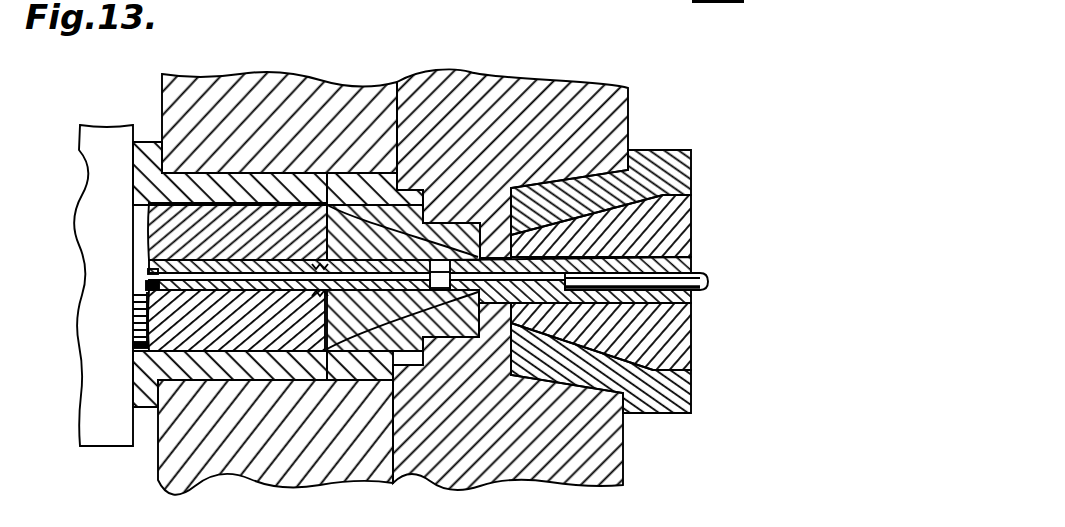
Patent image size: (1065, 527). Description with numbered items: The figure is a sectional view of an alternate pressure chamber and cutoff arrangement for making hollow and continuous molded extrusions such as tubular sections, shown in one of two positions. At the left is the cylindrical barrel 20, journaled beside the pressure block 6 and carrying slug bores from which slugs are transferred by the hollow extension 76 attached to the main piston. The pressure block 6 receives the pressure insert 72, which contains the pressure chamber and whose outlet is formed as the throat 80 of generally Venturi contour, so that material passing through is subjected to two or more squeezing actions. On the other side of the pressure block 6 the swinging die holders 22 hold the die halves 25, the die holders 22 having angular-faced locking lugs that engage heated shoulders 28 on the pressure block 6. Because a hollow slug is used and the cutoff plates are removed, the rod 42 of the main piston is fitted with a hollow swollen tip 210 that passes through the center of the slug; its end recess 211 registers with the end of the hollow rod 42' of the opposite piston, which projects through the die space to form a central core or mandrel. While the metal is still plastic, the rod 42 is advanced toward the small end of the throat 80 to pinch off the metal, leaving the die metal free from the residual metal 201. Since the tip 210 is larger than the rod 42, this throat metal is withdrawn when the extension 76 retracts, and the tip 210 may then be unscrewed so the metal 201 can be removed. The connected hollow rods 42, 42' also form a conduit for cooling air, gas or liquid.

The cylindrical barrel 20 is at (90, 160).
The pressure insert 72 is at (150, 140).
The pressure block 6 is at (297, 105).
The hollow swollen tip 210 is at (362, 206).
The throat 80 is at (412, 204).
The end recess 211 is at (453, 270).
The shoulders 28 is at (600, 103).
The swinging die holders 22 is at (663, 165).
The die halves 25 is at (680, 213).
The hollow rod 42' is at (663, 269).
The rod 42 is at (326, 273).
The extension 76 is at (150, 322).
The residual metal 201 is at (357, 313).